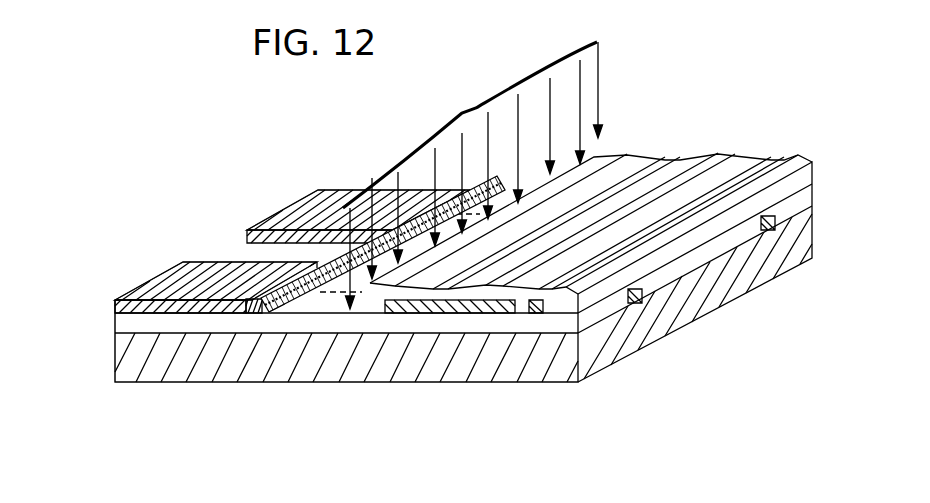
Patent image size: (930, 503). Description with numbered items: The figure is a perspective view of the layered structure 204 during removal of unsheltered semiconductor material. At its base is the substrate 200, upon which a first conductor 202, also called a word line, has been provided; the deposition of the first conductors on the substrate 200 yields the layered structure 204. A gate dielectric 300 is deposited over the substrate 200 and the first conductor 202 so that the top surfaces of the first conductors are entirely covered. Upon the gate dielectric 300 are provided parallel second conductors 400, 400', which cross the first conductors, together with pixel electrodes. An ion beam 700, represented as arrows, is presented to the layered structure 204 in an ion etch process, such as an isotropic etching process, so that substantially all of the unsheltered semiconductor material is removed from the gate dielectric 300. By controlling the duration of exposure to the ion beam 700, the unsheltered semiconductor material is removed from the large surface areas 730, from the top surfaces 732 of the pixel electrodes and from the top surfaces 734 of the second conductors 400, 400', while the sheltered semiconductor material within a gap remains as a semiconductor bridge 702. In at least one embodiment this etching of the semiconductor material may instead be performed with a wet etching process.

The substrate 200 is at (607, 348).
The first conductor 202 is at (641, 291).
The layered structure 204 is at (113, 302).
The gate dielectric 300 is at (378, 323).
The second conductor 400 is at (478, 367).
The second conductor 400' is at (250, 375).
The ion beam 700 is at (473, 175).
The semiconductor bridge 702 is at (245, 307).
The large surface area 730 is at (260, 256).
The top surface of pixel electrode 732 is at (295, 218).
The top surface of second conductor 734 is at (480, 196).